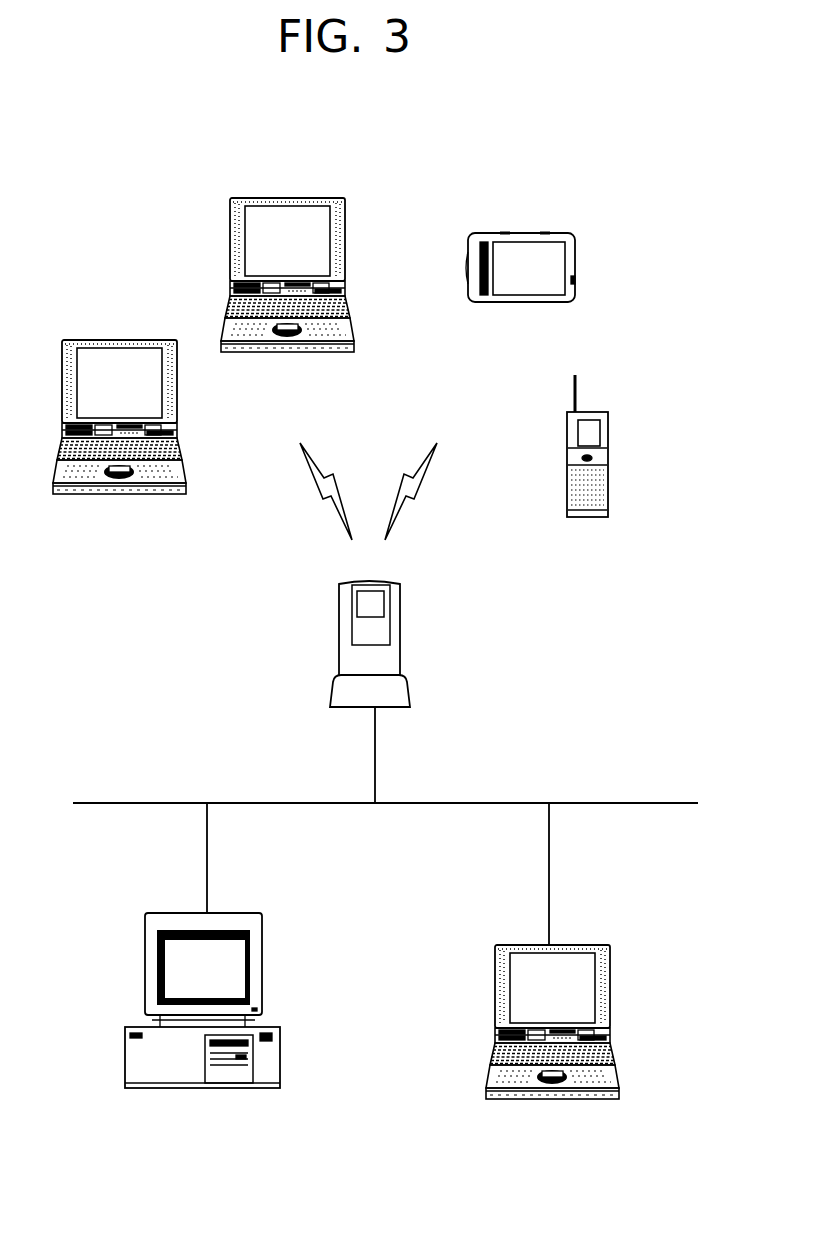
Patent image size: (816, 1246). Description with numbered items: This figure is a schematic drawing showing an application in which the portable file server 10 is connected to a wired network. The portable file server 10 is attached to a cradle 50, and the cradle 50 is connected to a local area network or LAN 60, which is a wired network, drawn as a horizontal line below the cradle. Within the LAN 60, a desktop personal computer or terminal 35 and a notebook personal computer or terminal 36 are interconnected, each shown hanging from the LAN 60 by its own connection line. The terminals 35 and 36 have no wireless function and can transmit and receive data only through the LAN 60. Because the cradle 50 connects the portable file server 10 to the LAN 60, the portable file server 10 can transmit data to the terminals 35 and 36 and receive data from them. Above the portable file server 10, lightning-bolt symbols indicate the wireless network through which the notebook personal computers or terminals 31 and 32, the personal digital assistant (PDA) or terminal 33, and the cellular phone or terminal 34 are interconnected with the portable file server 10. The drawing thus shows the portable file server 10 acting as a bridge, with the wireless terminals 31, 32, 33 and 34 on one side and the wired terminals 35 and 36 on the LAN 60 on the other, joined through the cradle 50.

The portable file server 10 is at (400, 619).
The notebook personal computer 31 is at (118, 340).
The notebook personal computer 32 is at (287, 198).
The personal digital assistant 33 is at (541, 302).
The cellular phone 34 is at (585, 517).
The desktop personal computer 35 is at (234, 913).
The notebook personal computer 36 is at (575, 945).
The cradle 50 is at (410, 690).
The local area network 60 is at (270, 803).